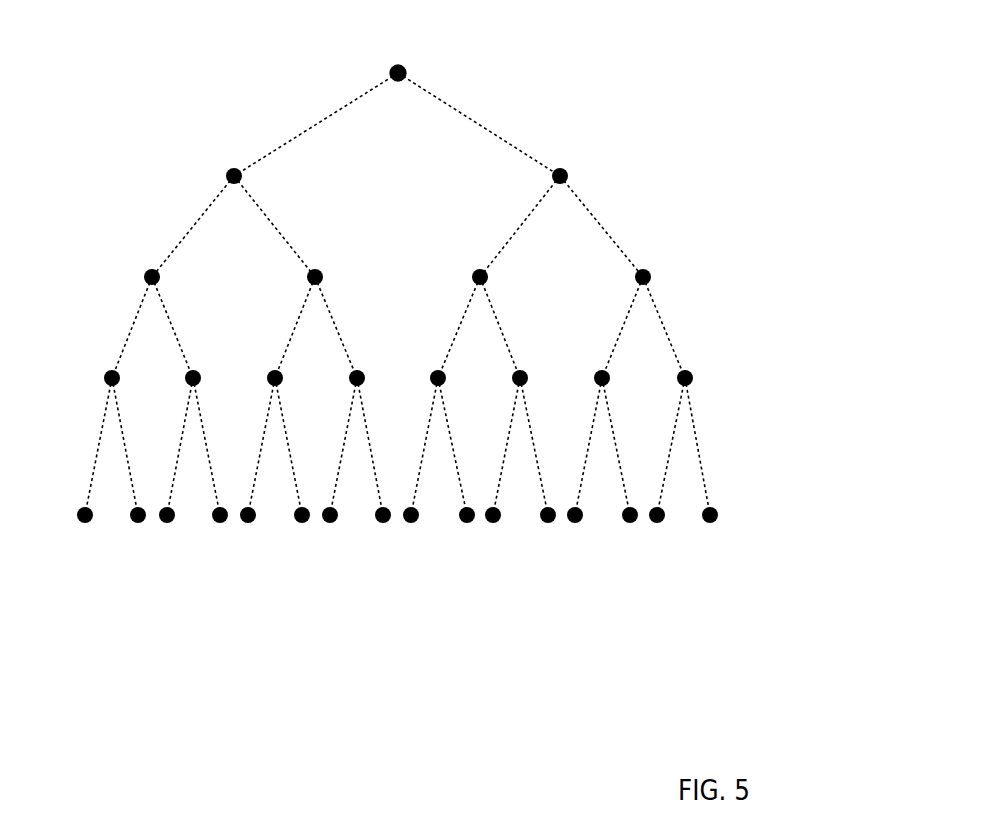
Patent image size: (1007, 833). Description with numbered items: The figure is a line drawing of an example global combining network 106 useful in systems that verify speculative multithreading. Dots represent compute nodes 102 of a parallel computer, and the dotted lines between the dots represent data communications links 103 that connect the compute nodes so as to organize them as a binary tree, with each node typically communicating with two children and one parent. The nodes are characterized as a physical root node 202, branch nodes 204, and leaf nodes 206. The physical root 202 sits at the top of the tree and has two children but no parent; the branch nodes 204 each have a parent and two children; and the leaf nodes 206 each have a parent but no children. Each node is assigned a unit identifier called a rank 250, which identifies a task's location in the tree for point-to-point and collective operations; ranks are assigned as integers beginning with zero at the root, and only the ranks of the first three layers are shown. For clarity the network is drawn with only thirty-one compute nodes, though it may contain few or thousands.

The physical root node 202 is at (518, 49).
The data communications links 103 is at (323, 118).
The rank 250 is at (527, 185).
The branch nodes 204 is at (730, 130).
The leaf nodes 206 is at (730, 537).
The compute nodes 102 is at (467, 522).
The global combining network 106 is at (426, 370).